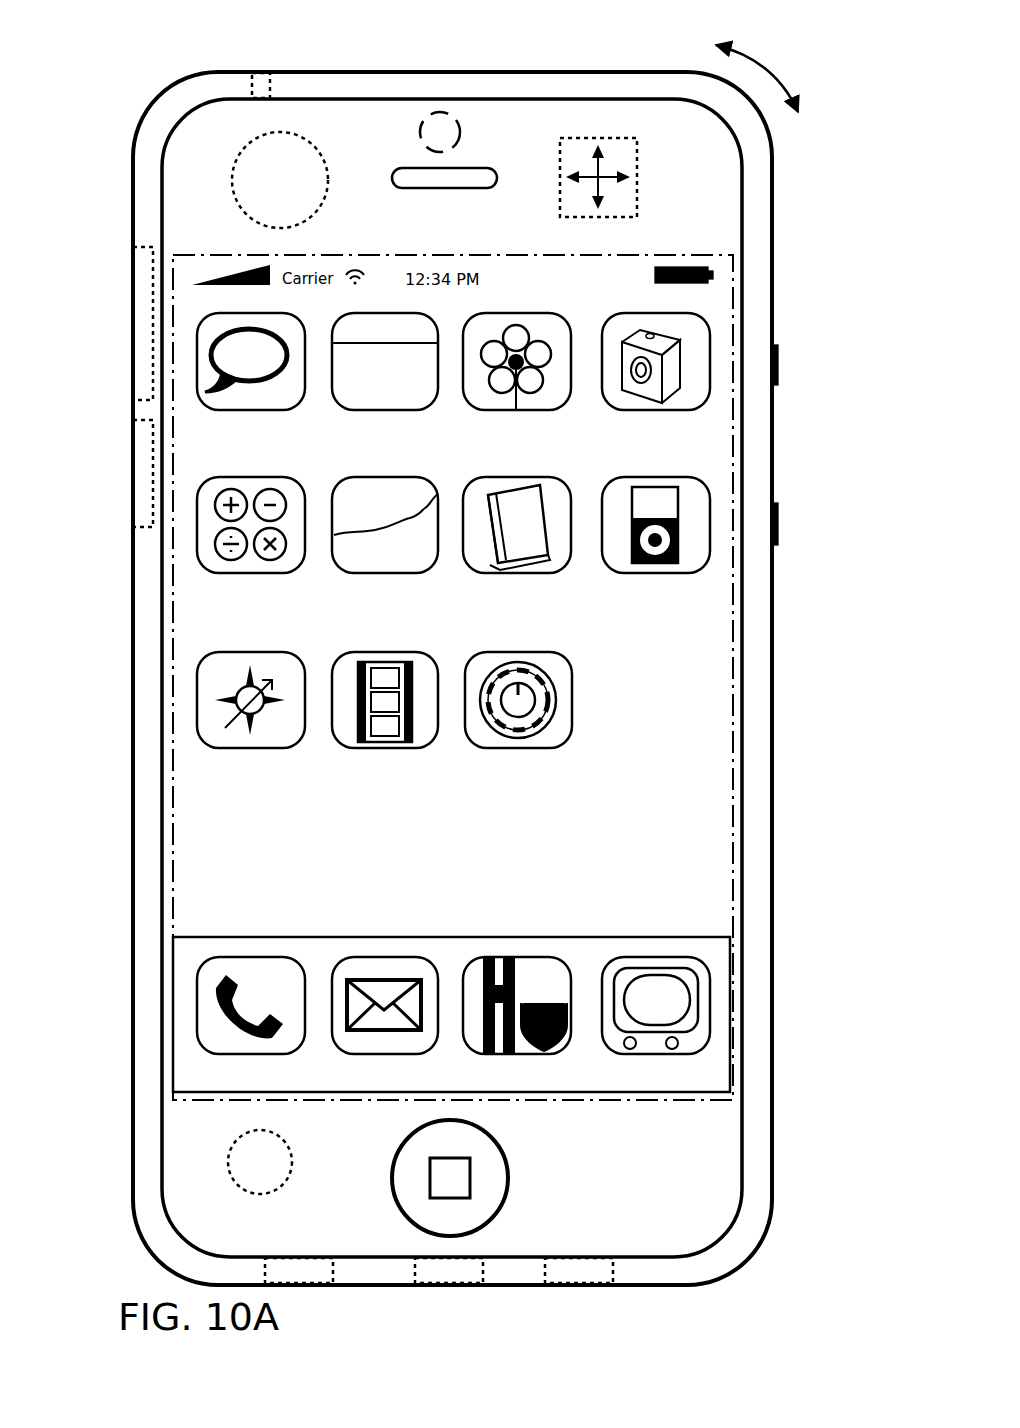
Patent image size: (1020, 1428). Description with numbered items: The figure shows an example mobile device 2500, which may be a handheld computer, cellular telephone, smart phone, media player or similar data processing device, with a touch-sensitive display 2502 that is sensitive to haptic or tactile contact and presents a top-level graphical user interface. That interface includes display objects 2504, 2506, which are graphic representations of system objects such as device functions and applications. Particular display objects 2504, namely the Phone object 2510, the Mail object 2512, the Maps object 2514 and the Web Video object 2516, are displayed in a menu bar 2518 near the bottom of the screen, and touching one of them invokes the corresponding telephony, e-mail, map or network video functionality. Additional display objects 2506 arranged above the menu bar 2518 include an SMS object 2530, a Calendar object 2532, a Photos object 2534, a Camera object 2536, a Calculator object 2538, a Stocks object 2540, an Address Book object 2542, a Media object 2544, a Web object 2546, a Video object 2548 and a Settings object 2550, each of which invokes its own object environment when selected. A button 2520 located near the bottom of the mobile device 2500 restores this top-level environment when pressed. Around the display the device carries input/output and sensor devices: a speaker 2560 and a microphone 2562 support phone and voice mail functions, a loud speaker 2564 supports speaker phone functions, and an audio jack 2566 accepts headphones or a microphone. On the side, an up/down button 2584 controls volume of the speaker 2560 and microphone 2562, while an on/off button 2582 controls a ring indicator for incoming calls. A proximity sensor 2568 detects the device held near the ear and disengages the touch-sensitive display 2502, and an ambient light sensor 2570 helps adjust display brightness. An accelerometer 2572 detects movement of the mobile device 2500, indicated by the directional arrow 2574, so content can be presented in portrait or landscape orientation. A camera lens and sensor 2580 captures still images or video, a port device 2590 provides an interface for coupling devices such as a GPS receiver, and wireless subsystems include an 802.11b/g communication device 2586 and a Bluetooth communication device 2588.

The mobile device 2500 is at (542, 70).
The touch-sensitive display 2502 is at (664, 256).
The display objects 2504 is at (718, 950).
The display objects 2506 is at (718, 306).
The Phone object 2510 is at (248, 957).
The Mail object 2512 is at (385, 957).
The Maps object 2514 is at (540, 957).
The Web Video object 2516 is at (656, 957).
The menu bar 2518 is at (600, 1096).
The button 2520 is at (508, 1178).
The SMS object 2530 is at (290, 409).
The Calendar object 2532 is at (427, 409).
The Photos object 2534 is at (551, 409).
The Camera object 2536 is at (702, 409).
The Calculator object 2538 is at (290, 573).
The Stocks object 2540 is at (427, 573).
The Address Book object 2542 is at (571, 573).
The Media object 2544 is at (702, 573).
The Web object 2546 is at (290, 748).
The Video object 2548 is at (425, 748).
The Settings object 2550 is at (573, 748).
The speaker 2560 is at (421, 189).
The microphone 2562 is at (334, 1282).
The loud speaker 2564 is at (614, 1282).
The audio jack 2566 is at (272, 80).
The proximity sensor 2568 is at (322, 185).
The ambient light sensor 2570 is at (284, 1189).
The accelerometer 2572 is at (639, 181).
The directional arrow 2574 is at (784, 76).
The camera lens and sensor 2580 is at (459, 131).
The on/off button 2582 is at (780, 367).
The up/down button 2584 is at (780, 525).
The 802.11b/g communication device 2586 is at (146, 248).
The Bluetooth communication device 2588 is at (146, 421).
The port device 2590 is at (484, 1282).